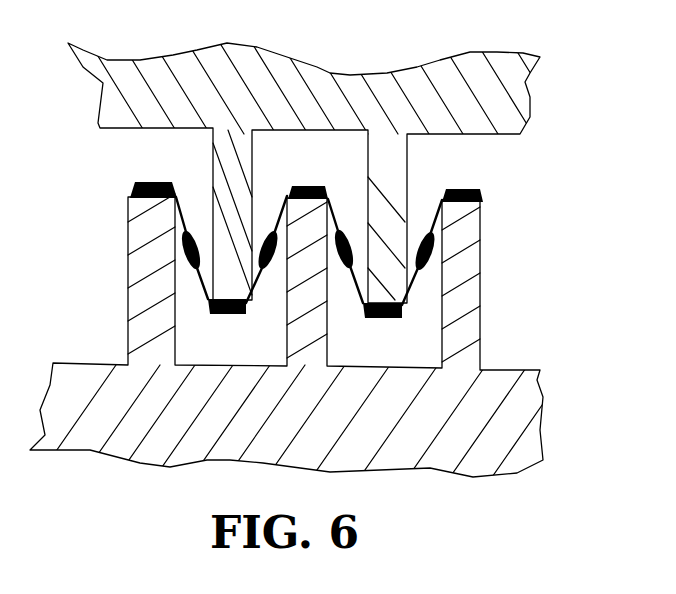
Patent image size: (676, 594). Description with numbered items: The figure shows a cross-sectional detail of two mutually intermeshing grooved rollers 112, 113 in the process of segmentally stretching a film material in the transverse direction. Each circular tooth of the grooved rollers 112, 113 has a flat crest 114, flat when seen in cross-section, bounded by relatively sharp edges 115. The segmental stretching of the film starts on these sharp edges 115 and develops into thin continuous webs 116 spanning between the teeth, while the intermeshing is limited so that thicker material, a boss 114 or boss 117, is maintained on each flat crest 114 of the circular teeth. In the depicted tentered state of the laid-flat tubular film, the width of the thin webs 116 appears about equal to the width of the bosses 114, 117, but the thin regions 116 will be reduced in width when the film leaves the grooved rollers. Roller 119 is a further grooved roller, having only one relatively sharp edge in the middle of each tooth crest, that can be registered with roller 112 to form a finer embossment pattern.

The grooved roller 112 is at (512, 78).
The grooved roller 113 is at (530, 420).
The flat crest 114 is at (465, 190).
The sharp edge 115 is at (484, 194).
The thin continuous web 116 is at (353, 272).
The boss 117 is at (427, 272).
The grooved roller 119 is at (384, 319).